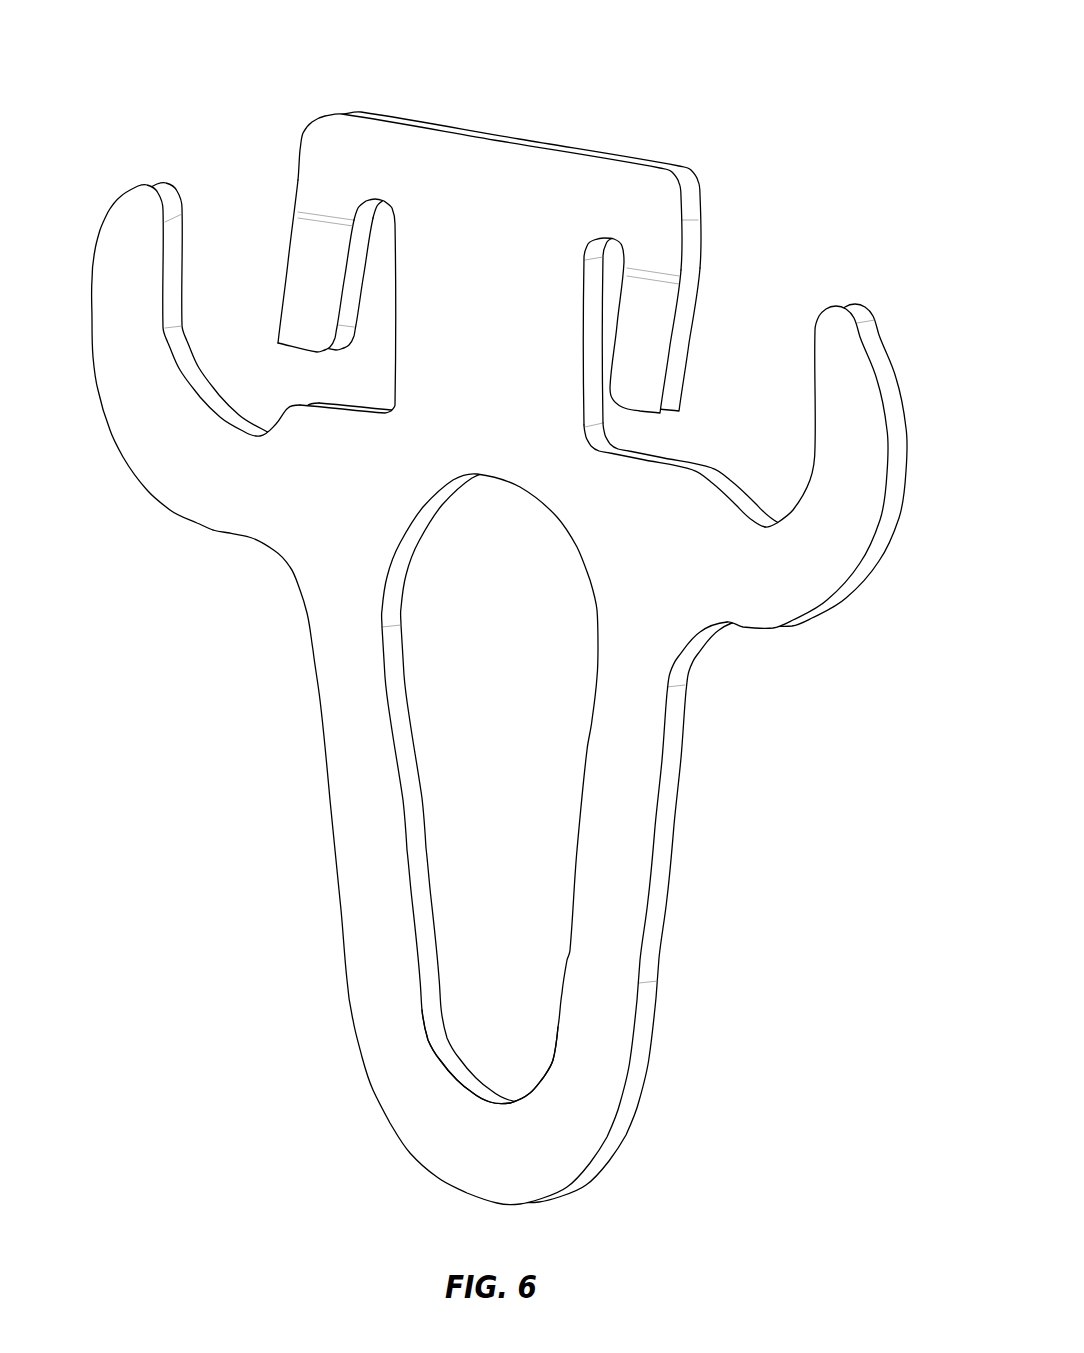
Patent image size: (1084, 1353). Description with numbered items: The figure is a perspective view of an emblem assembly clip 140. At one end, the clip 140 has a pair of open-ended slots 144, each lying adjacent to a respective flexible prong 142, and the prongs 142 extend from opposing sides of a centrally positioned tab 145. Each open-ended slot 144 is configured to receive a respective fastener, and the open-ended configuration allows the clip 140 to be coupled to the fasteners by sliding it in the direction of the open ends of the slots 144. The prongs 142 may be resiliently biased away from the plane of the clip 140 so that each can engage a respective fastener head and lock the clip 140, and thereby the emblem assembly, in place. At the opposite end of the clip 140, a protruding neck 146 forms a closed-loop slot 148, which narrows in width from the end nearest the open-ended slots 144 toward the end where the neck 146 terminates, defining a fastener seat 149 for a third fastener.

The clip 140 is at (500, 603).
The flexible prong 142 is at (307, 270).
The open-ended slot 144 is at (227, 366).
The centrally positioned tab 145 is at (504, 294).
The protruding neck 146 is at (620, 825).
The closed-loop slot 148 is at (515, 807).
The fastener seat 149 is at (498, 1080).